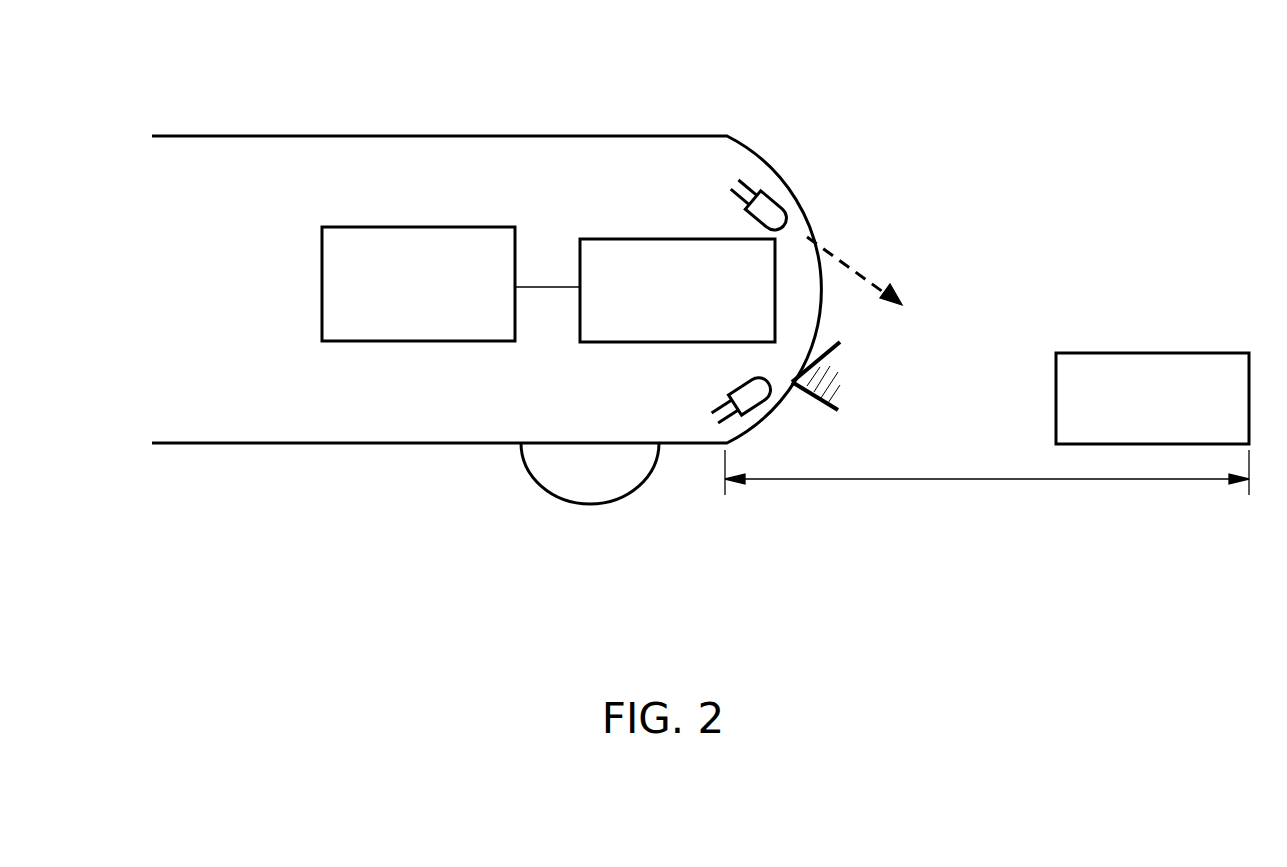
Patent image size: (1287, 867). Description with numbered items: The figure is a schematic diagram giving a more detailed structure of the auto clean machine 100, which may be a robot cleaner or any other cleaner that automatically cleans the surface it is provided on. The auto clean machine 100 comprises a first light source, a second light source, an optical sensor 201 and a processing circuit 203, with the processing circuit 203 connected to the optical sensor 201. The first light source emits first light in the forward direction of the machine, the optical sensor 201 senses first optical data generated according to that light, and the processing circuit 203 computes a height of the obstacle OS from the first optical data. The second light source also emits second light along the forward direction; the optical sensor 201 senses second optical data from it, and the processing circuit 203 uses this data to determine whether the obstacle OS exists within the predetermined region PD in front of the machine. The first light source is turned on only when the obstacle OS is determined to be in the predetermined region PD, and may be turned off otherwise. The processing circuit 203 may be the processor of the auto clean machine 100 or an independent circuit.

The auto clean machine 100 is at (700, 72).
The processing circuit 203 is at (412, 226).
The optical sensor 201 is at (666, 238).
The obstacle OS is at (1146, 352).
The predetermined region PD is at (987, 470).